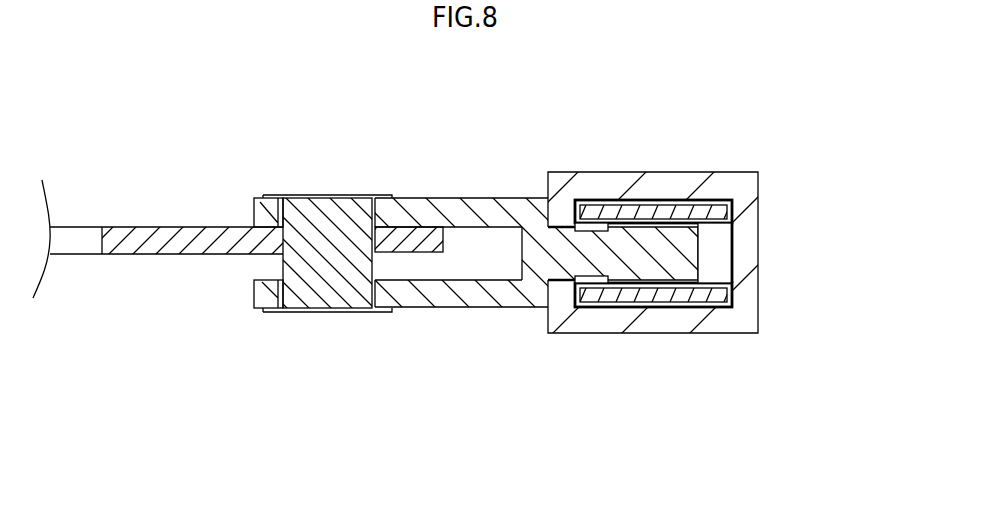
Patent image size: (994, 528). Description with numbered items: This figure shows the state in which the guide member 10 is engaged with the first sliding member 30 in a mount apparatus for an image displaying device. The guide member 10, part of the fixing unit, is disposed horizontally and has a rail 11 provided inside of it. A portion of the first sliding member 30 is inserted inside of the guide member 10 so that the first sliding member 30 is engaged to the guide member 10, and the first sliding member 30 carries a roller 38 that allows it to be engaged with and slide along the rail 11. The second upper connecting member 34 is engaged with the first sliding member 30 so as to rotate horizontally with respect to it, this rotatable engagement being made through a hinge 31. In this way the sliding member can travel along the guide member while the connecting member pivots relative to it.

The guide member 10 is at (678, 327).
The rail 11 is at (718, 242).
The first sliding member 30 is at (257, 298).
The hinge 31 is at (320, 300).
The second upper connecting member 34 is at (162, 227).
The roller 38 is at (633, 203).